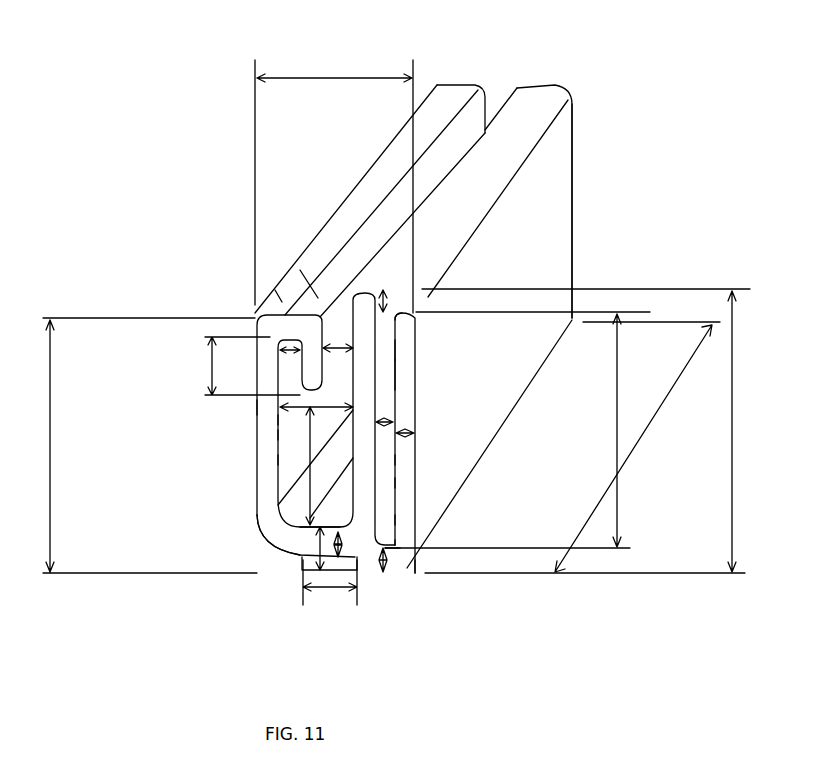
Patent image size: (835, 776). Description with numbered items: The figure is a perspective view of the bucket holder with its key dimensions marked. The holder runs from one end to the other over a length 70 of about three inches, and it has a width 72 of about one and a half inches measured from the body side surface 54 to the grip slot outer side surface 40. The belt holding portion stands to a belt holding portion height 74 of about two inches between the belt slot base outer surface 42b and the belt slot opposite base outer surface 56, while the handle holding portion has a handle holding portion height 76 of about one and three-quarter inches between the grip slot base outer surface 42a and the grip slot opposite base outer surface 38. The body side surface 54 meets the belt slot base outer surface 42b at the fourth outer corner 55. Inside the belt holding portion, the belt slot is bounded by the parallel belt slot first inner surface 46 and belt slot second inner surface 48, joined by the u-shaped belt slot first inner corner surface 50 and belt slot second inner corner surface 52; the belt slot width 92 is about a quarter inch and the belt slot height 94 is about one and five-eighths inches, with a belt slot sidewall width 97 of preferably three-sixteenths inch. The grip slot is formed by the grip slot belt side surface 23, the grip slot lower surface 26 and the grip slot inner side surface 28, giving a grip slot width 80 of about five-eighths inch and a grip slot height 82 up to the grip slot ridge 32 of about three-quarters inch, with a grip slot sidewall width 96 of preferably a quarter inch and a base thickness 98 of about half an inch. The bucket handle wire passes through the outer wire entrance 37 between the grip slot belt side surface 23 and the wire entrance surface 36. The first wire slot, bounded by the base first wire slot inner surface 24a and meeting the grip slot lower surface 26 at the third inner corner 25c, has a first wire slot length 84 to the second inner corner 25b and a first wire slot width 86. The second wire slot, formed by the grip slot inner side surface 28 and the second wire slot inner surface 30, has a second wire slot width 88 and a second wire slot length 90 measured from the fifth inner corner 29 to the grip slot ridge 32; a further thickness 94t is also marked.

The width 72 is at (312, 80).
The outer wire entrance 37 is at (395, 233).
The fourth outer corner 55 is at (318, 298).
The fifth inner corner 29 is at (282, 302).
The grip slot opposite base outer surface 38 is at (365, 232).
The belt slot opposite base outer surface 56 is at (475, 216).
The body side surface 54 is at (500, 386).
The second wire slot width 88 is at (278, 345).
The wall thickness dimension 94t is at (406, 312).
The belt slot second inner corner surface 52 is at (398, 337).
The belt slot first inner surface 46 is at (400, 352).
The belt slot second inner surface 48 is at (395, 388).
The belt slot width 92 is at (385, 420).
The belt slot sidewall width 97 is at (410, 433).
The wire entrance surface 36 is at (333, 345).
The grip slot ridge 32 is at (317, 453).
The second wire slot length 90 is at (208, 365).
The second wire slot inner surface 30 is at (245, 395).
The handle holding portion height 76 is at (45, 412).
The grip slot sidewall width 96 is at (265, 407).
The grip slot outer side surface 40 is at (300, 420).
The grip slot width 80 is at (293, 430).
The grip slot height 82 is at (300, 447).
The grip slot inner side surface 28 is at (300, 460).
The grip slot lower surface 26 is at (345, 504).
The grip slot belt side surface 23 is at (403, 460).
The third inner corner 25c is at (397, 482).
The first wire slot width 86 is at (397, 520).
The base first wire slot inner surface 24a is at (395, 545).
The belt slot first inner corner surface 50 is at (398, 555).
The base thickness 98 is at (302, 557).
The second inner corner 25b is at (338, 545).
The grip slot base outer surface 42a is at (300, 565).
The first wire slot length 84 is at (322, 592).
The belt slot base outer surface 42b is at (370, 575).
The length 70 is at (630, 450).
The belt holding portion height 74 is at (735, 425).
The belt slot height 94 is at (617, 378).